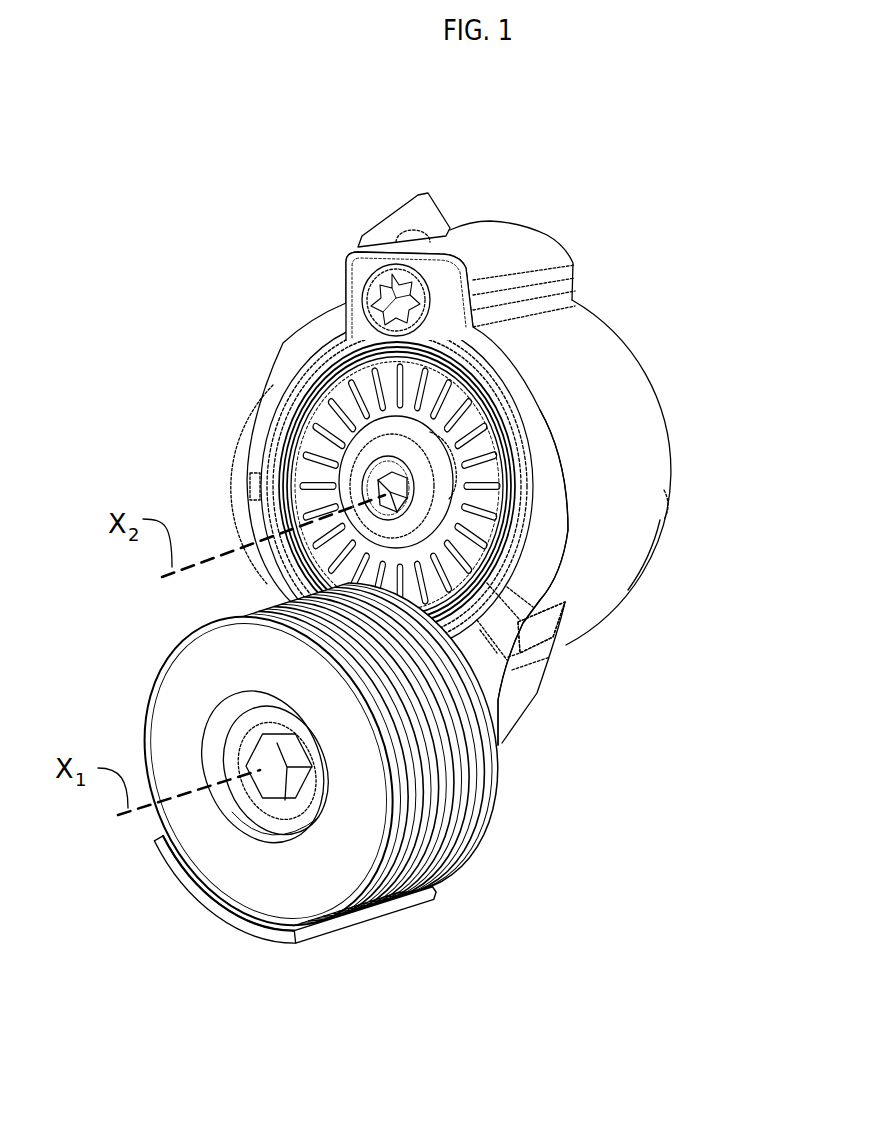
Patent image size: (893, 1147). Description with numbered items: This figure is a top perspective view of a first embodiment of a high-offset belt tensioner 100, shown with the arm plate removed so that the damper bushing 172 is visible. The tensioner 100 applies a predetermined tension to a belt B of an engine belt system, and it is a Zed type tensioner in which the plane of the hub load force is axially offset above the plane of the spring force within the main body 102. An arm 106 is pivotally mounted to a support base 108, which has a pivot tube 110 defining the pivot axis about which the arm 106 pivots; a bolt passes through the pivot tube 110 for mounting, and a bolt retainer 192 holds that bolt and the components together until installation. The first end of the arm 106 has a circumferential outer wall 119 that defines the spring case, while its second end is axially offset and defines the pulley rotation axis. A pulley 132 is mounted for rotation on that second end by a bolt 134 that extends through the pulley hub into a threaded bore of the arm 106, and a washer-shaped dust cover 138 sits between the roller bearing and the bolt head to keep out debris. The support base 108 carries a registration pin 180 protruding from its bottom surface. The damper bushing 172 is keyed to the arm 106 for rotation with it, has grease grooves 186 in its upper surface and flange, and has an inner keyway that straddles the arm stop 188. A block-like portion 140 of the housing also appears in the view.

The high-offset belt tensioner 100 is at (138, 376).
The main body 102 is at (652, 404).
The arm 106 is at (595, 592).
The support base 108 is at (352, 497).
The pivot tube 110 is at (352, 497).
The circumferential outer wall 119 is at (650, 535).
The pulley 132 is at (485, 788).
The bolt 134 is at (268, 786).
The dust cover 138 is at (243, 707).
The mounting boss 140 is at (518, 250).
The damper bushing 172 is at (468, 428).
The registration pin 180 is at (668, 502).
The grease grooves 186 is at (470, 560).
The arm stop 188 is at (522, 655).
The bolt retainer 192 is at (444, 221).
The belt B is at (462, 893).